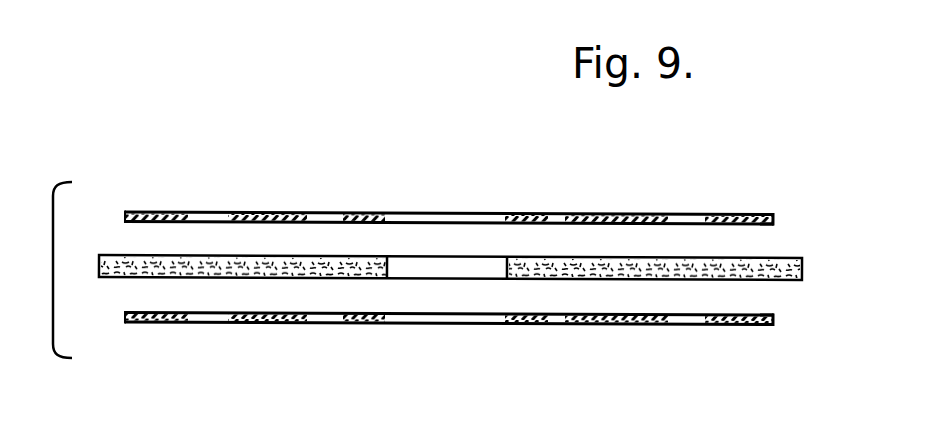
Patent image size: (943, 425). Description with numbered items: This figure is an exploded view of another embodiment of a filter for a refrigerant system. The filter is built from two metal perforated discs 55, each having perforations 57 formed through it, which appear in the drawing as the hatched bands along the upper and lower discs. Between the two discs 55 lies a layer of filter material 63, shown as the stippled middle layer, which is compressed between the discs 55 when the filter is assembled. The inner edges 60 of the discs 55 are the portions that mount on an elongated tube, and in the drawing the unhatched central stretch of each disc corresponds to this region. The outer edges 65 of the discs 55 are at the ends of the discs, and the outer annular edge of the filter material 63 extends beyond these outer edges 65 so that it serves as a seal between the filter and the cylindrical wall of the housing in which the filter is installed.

The layer of filter material 63 is at (330, 258).
The inner edges 60 is at (506, 216).
The perforations 57 is at (555, 217).
The metal perforated discs 55 is at (616, 216).
The outer edges 65 is at (773, 217).